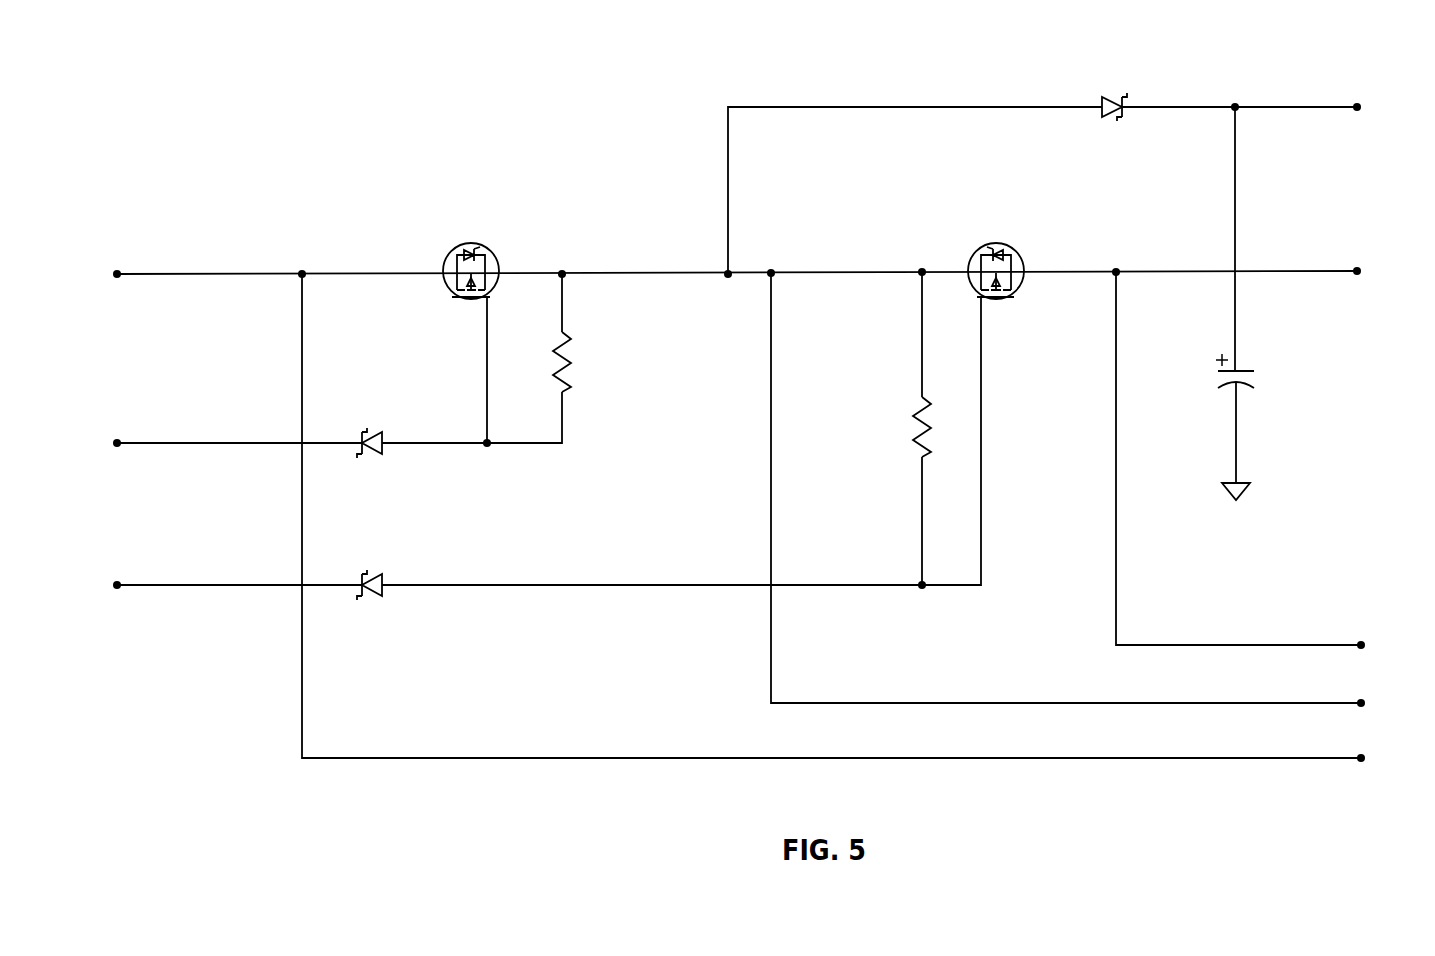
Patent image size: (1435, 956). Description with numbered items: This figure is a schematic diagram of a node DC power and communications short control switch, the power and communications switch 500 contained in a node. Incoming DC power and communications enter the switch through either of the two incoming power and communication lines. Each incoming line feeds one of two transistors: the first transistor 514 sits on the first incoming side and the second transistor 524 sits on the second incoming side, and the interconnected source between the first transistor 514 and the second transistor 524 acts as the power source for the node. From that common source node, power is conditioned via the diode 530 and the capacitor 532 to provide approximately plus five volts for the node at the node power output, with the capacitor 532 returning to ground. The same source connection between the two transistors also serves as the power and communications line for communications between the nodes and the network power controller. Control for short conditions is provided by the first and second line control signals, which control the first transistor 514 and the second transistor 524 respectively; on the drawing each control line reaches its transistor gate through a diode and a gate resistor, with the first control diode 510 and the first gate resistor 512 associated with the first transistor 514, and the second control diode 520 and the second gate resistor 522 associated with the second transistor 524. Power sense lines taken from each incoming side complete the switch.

The power and communications switch 500 is at (224, 78).
The diode D4 510 is at (384, 433).
The resistor R3 512 is at (571, 378).
The transistor Q1 514 is at (446, 283).
The diode D1 520 is at (384, 575).
The resistor R4 522 is at (914, 436).
The transistor Q2 524 is at (1012, 296).
The diode D3 530 is at (1099, 104).
The capacitor C1 532 is at (1218, 378).